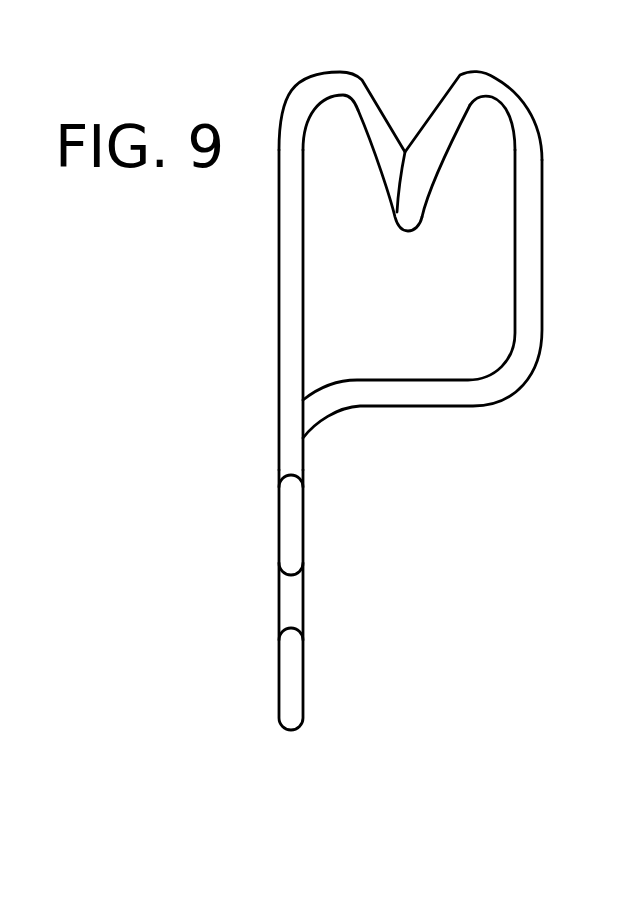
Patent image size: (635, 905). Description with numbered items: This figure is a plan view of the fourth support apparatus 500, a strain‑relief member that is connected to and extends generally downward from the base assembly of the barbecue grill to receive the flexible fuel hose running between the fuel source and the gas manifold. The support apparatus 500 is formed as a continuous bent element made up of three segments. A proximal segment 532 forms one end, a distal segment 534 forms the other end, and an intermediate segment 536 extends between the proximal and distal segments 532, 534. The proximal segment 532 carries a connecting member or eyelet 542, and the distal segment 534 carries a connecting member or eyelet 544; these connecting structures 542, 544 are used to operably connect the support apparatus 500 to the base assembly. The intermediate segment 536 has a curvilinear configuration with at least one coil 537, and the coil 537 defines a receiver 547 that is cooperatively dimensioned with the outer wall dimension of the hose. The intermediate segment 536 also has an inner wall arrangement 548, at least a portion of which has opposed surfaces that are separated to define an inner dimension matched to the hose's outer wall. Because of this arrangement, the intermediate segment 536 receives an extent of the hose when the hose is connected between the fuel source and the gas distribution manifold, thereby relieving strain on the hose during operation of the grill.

The support apparatus 500 is at (585, 139).
The proximal segment 532 is at (287, 325).
The distal segment 534 is at (298, 598).
The intermediate segment 536 is at (530, 281).
The coil 537 is at (465, 78).
The eyelet 542 is at (288, 525).
The eyelet 544 is at (282, 670).
The receiver 547 is at (455, 180).
The inner wall arrangement 548 is at (380, 168).